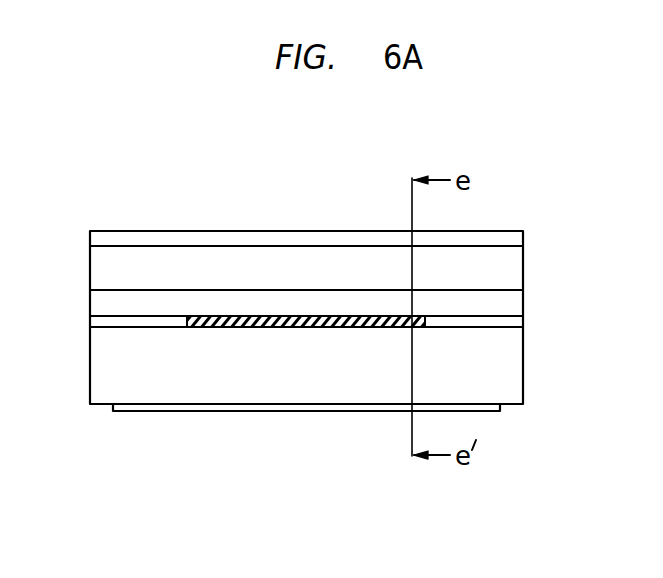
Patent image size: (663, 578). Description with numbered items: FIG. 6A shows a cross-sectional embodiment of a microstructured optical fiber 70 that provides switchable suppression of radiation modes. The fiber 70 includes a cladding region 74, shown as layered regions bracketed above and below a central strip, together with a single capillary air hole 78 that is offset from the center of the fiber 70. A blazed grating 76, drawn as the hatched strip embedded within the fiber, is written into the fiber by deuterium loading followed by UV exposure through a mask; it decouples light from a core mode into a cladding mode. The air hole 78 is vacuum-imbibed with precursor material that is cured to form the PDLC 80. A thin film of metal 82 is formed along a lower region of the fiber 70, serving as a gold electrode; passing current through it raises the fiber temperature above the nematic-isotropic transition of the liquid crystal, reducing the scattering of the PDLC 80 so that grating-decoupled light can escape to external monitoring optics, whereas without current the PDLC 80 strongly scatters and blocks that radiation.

The microstructured optical fiber 70 is at (554, 197).
The cladding region 74 is at (77, 232).
The blazed grating 76 is at (250, 329).
The capillary air hole 78 is at (138, 244).
The PDLC 80 is at (244, 256).
The thin film of metal 82 is at (283, 412).